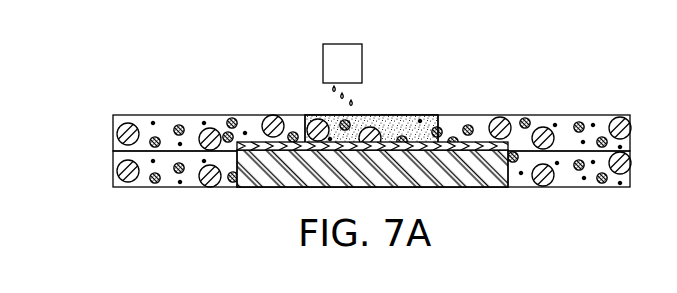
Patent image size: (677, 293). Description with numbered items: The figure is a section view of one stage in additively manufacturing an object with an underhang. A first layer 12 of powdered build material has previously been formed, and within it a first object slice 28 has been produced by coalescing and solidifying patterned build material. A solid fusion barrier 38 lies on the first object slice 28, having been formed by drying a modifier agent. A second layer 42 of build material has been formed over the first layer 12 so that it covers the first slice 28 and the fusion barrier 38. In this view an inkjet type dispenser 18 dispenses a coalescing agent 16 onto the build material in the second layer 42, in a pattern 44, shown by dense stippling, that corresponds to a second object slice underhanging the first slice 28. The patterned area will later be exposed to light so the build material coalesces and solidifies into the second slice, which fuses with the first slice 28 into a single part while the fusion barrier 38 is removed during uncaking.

The first layer 12 is at (113, 168).
The coalescing agent 16 is at (330, 90).
The inkjet type dispenser 18 is at (352, 60).
The first object slice 28 is at (262, 183).
The fusion barrier 38 is at (255, 116).
The second layer 42 is at (113, 131).
The pattern 44 is at (416, 116).